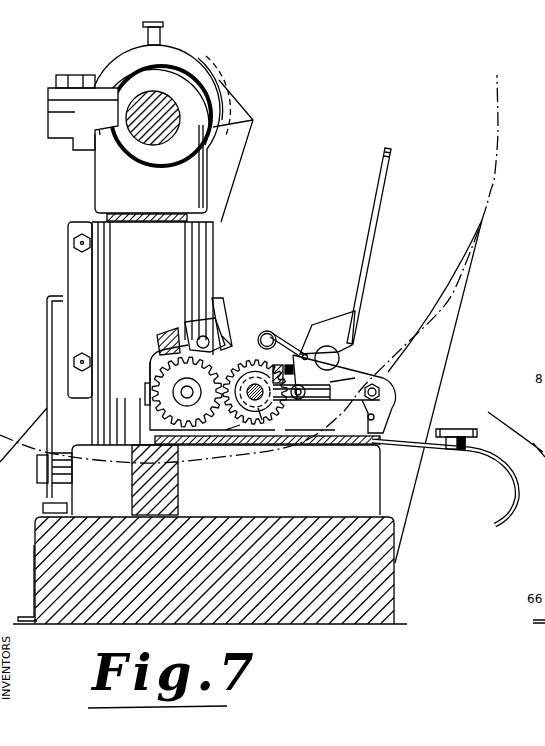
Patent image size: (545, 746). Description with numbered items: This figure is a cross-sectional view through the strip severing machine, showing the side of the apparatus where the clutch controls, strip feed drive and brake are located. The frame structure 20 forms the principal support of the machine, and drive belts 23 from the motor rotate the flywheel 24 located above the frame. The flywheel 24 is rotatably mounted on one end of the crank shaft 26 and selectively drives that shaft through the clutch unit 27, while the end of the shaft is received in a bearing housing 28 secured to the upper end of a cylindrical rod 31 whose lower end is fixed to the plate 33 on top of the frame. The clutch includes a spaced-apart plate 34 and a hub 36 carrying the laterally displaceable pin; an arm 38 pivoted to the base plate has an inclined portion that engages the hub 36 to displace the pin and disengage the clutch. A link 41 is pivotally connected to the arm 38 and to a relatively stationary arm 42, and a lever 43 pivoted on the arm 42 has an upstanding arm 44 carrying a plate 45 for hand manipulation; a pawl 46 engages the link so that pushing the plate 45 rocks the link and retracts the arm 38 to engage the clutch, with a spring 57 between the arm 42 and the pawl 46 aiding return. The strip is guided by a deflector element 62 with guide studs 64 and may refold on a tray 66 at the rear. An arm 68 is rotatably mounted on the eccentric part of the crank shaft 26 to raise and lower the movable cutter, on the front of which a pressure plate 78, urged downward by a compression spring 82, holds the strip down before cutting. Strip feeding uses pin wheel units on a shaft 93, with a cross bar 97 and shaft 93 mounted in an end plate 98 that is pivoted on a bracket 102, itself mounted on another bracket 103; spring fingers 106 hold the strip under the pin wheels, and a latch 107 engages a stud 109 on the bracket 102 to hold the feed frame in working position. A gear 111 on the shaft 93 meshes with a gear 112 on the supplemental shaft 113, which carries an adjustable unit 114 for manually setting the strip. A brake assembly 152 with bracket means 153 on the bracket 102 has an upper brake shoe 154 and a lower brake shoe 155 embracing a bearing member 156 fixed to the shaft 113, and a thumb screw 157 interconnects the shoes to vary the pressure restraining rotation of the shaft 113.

The frame structure 20 is at (405, 620).
The drive belts 23 is at (408, 532).
The flywheel 24 is at (458, 286).
The crank shaft 26 is at (166, 146).
The clutch unit 27 is at (210, 63).
The bearing housing 28 is at (170, 70).
The cylindrical rod 31 is at (130, 220).
The plate 33 is at (395, 577).
The plate 34 is at (216, 76).
The hub 36 is at (217, 128).
The arm 38 is at (240, 162).
The link 41 is at (217, 307).
The arm 42 is at (230, 345).
The lever 43 is at (320, 316).
The upstanding arm 44 is at (338, 316).
The plate 45 is at (388, 180).
The pawl 46 is at (350, 358).
The spring 57 is at (272, 331).
The deflector element 62 is at (497, 527).
The guide studs 64 is at (477, 440).
The tray 66 is at (32, 619).
The arm 68 is at (162, 52).
The pressure plate 78 is at (146, 392).
The compression spring 82 is at (166, 340).
The shaft 93 is at (184, 390).
The cross bar 97 is at (210, 340).
The end plate 98 is at (212, 332).
The bracket 102 is at (392, 388).
The bracket 103 is at (336, 446).
The spring fingers 106 is at (120, 418).
The latch 107 is at (384, 368).
The stud 109 is at (396, 400).
The gear 111 is at (150, 372).
The gear 112 is at (247, 362).
The supplemental shaft 113 is at (262, 402).
The unit 114 is at (193, 403).
The brake assembly 152 is at (338, 386).
The bracket means 153 is at (312, 441).
The upper brake shoe 154 is at (301, 384).
The lower brake shoe 155 is at (258, 410).
The bearing member 156 is at (286, 392).
The thumb screw 157 is at (304, 354).